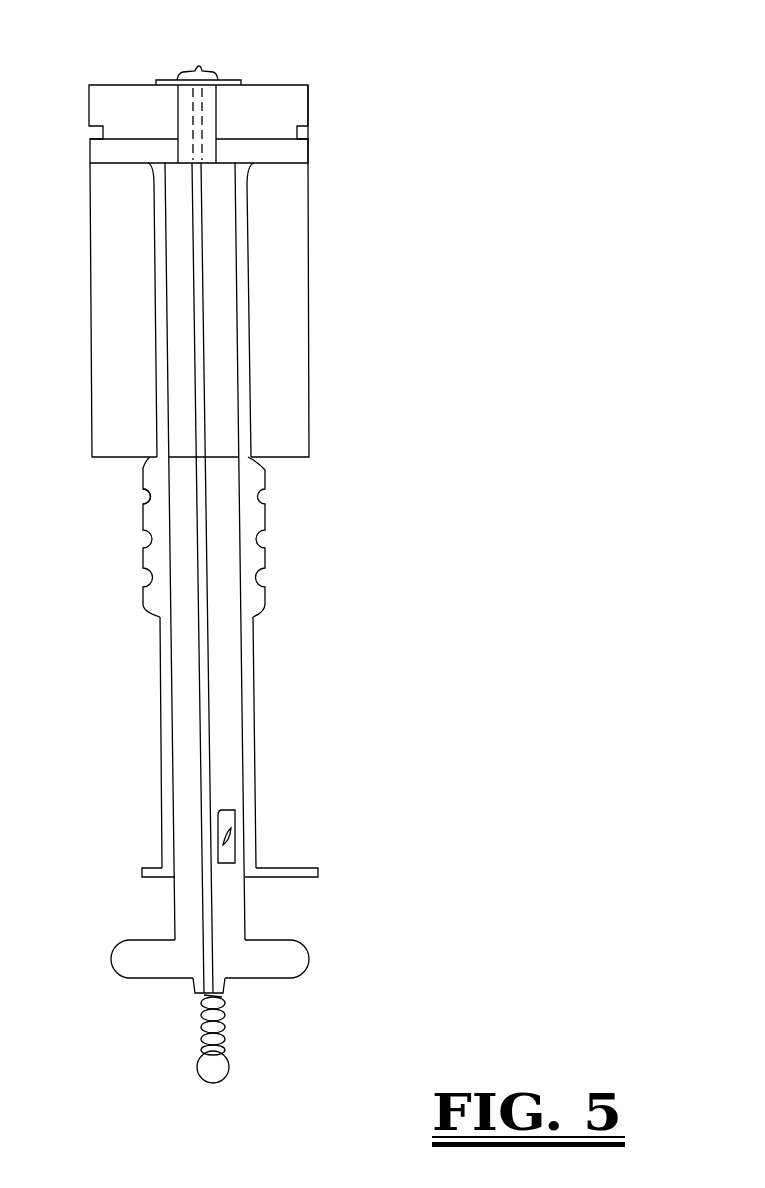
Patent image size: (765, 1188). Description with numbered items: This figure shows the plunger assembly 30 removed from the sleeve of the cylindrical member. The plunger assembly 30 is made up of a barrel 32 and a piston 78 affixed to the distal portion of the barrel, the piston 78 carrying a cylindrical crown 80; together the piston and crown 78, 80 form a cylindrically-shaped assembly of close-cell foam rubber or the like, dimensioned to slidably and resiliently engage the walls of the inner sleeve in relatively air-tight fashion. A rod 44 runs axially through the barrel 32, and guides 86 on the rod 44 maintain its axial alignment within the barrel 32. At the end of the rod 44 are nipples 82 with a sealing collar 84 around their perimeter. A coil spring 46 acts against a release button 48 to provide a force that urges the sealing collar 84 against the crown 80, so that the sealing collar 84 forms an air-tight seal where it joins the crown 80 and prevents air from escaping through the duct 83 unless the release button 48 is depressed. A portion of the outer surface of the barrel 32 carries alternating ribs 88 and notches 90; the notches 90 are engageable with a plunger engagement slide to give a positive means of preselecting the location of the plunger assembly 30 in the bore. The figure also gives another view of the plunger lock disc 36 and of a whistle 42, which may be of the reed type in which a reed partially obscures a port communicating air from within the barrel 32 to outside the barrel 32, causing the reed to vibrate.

The plunger assembly 30 is at (368, 362).
The barrel 32 is at (160, 723).
The plunger lock disc 36 is at (318, 871).
The whistle 42 is at (227, 815).
The rod 44 is at (210, 912).
The coil spring 46 is at (200, 1031).
The release button 48 is at (215, 1075).
The piston 78 is at (365, 273).
The cylindrical crown 80 is at (288, 102).
The nipples 82 is at (207, 70).
The duct 83 is at (188, 153).
The sealing collar 84 is at (170, 80).
The guides 86 is at (218, 458).
The ribs 88 is at (143, 558).
The notches 90 is at (152, 500).